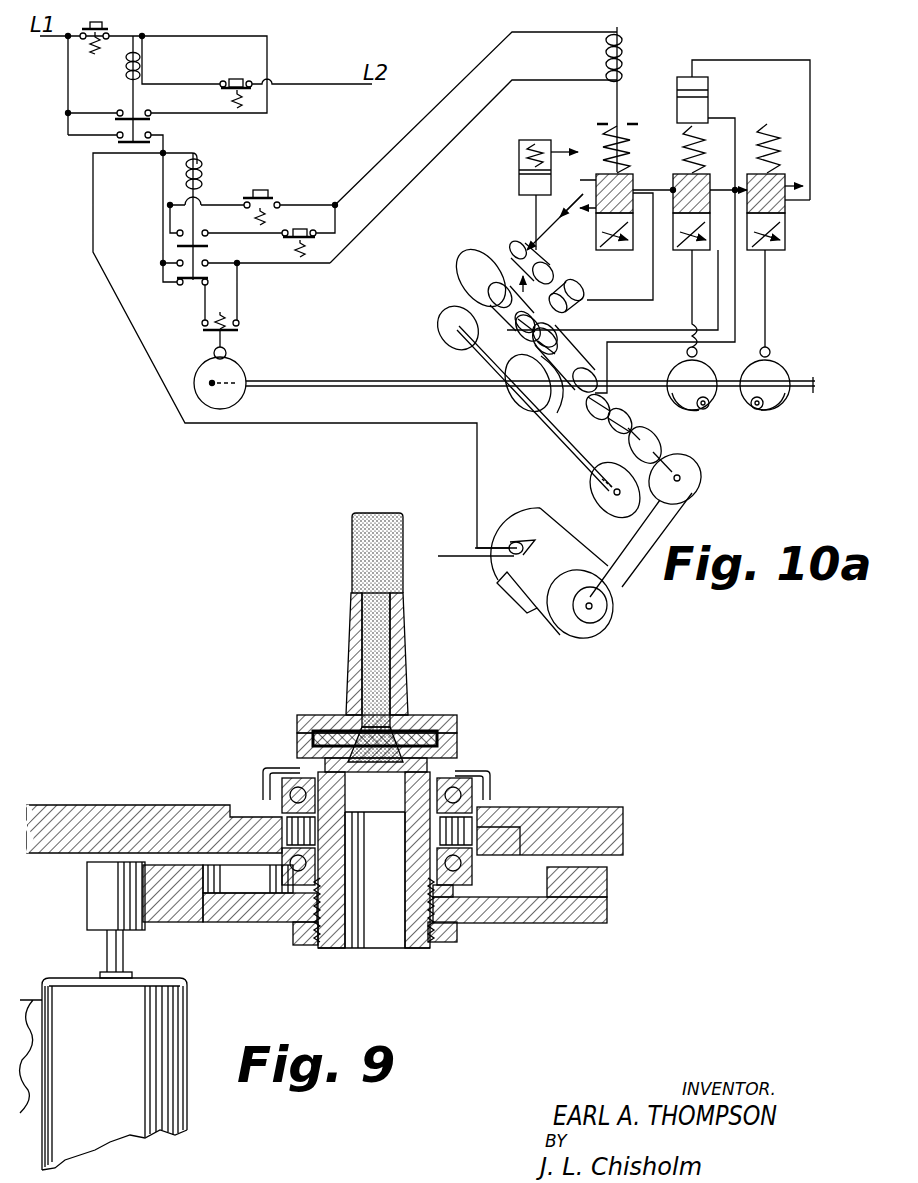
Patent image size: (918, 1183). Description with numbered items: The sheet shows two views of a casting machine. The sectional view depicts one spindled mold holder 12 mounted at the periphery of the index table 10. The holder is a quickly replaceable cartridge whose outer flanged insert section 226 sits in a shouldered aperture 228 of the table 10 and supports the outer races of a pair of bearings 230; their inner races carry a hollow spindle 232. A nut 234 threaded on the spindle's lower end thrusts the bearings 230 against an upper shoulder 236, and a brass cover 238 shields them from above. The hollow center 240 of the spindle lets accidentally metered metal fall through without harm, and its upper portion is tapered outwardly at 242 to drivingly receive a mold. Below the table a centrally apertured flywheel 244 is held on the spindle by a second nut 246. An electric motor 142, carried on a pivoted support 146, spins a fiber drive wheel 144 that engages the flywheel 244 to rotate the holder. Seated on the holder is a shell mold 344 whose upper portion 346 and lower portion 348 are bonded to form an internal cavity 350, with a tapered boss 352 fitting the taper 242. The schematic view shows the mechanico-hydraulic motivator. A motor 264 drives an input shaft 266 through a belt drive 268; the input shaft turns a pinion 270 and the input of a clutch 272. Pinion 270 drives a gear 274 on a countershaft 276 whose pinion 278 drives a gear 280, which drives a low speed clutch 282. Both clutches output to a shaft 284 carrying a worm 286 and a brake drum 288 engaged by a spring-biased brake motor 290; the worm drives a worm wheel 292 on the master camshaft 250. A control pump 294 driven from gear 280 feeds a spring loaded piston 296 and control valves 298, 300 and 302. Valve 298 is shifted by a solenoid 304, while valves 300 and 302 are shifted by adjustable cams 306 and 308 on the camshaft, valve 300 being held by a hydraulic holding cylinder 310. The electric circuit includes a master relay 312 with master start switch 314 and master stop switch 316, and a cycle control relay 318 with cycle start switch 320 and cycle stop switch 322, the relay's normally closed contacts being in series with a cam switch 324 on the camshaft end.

In FIG. 9, the index table 10 is at (624, 808).
In FIG. 9, the mold holder 12 is at (513, 763).
In FIG. 9, the electric motor 142 is at (172, 1003).
In FIG. 9, the fiber drive wheel 144 is at (100, 908).
In FIG. 9, the support 146 is at (33, 1000).
In FIG. 9, the outer flanged insert section 226 is at (497, 808).
In FIG. 9, the shouldered aperture 228 is at (519, 808).
In FIG. 9, the bearings 230 is at (282, 790).
In FIG. 9, the hollow spindle 232 is at (335, 830).
In FIG. 9, the nut 234 is at (445, 892).
In FIG. 9, the upper shoulder 236 is at (466, 768).
In FIG. 9, the brass cover 238 is at (282, 767).
In FIG. 9, the hollow center 240 is at (407, 933).
In FIG. 9, the outward taper 242 is at (505, 838).
In FIG. 9, the flywheel 244 is at (588, 900).
In FIG. 9, the second nut 246 is at (456, 936).
In FIG. 10a, the master camshaft 250 is at (812, 392).
In FIG. 10a, the motor 264 is at (511, 531).
In FIG. 10a, the input shaft 266 is at (658, 434).
In FIG. 10a, the belt drive 268 is at (683, 518).
In FIG. 10a, the pinion 270 is at (648, 431).
In FIG. 10a, the clutch 272 is at (593, 454).
In FIG. 10a, the gear 274 is at (598, 490).
In FIG. 10a, the countershaft 276 is at (560, 434).
In FIG. 10a, the pinion 278 is at (440, 326).
In FIG. 10a, the gear 280 is at (458, 268).
In FIG. 10a, the low speed clutch 282 is at (470, 302).
In FIG. 10a, the shaft 284 is at (597, 389).
In FIG. 10a, the worm 286 is at (570, 357).
In FIG. 10a, the brake drum 288 is at (557, 326).
In FIG. 10a, the brake motor 290 is at (580, 293).
In FIG. 10a, the worm wheel 292 is at (528, 398).
In FIG. 10a, the hydraulic control pump 294 is at (541, 262).
In FIG. 10a, the spring loaded piston 296 is at (519, 176).
In FIG. 10a, the control valve 298 is at (620, 175).
In FIG. 10a, the control valve 300 is at (684, 252).
In FIG. 10a, the control valve 302 is at (770, 252).
In FIG. 10a, the solenoid 304 is at (623, 56).
In FIG. 10a, the adjustable cam 306 is at (705, 410).
In FIG. 10a, the adjustable cam 308 is at (757, 410).
In FIG. 10a, the hydraulic holding cylinder 310 is at (710, 90).
In FIG. 10a, the master relay 312 is at (141, 65).
In FIG. 10a, the master start switch 314 is at (100, 22).
In FIG. 10a, the master stop switch 316 is at (237, 79).
In FIG. 10a, the cycle control relay 318 is at (202, 178).
In FIG. 10a, the cycle start switch 320 is at (261, 190).
In FIG. 10a, the cycle stop switch 322 is at (301, 228).
In FIG. 10a, the cam switch 324 is at (227, 352).
In FIG. 9, the shell mold 344 is at (350, 563).
In FIG. 9, the upper portion 346 is at (392, 635).
In FIG. 9, the lower portion 348 is at (453, 742).
In FIG. 9, the internal cavity 350 is at (370, 668).
In FIG. 9, the tapered boss 352 is at (397, 823).